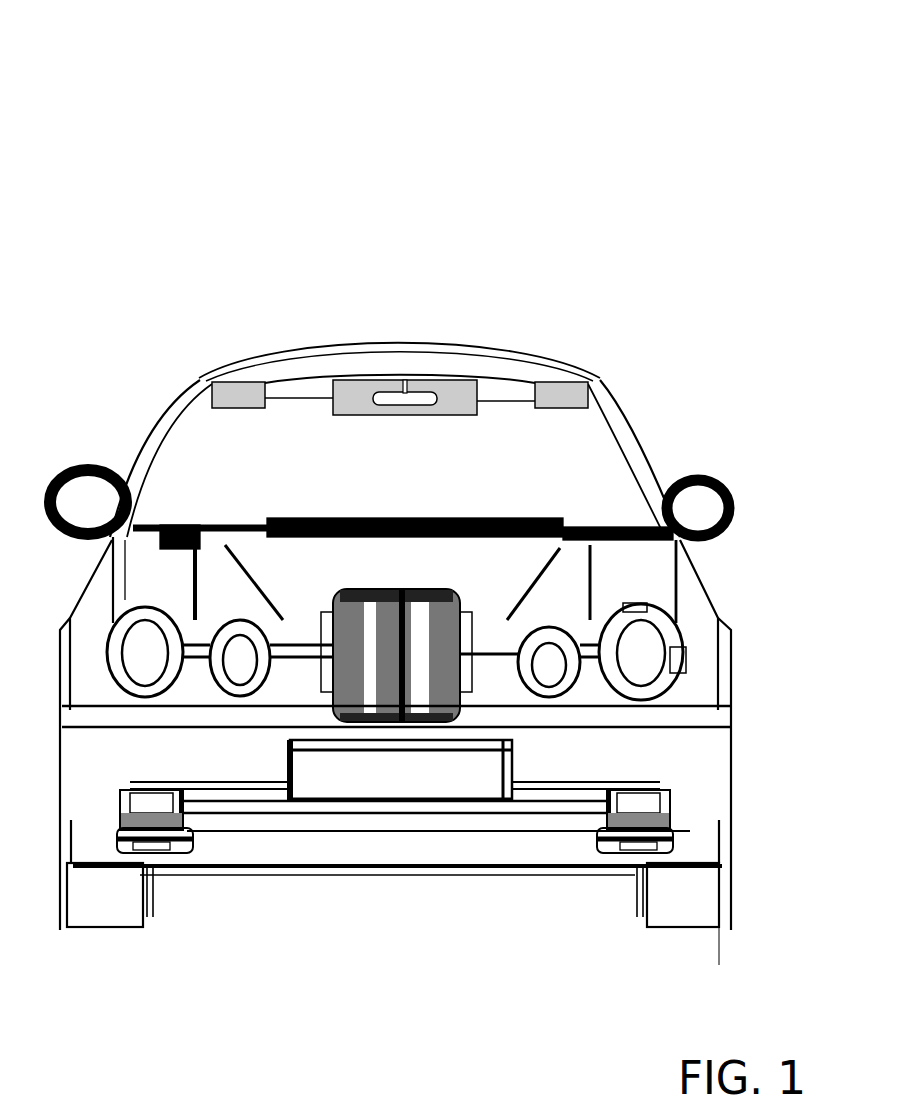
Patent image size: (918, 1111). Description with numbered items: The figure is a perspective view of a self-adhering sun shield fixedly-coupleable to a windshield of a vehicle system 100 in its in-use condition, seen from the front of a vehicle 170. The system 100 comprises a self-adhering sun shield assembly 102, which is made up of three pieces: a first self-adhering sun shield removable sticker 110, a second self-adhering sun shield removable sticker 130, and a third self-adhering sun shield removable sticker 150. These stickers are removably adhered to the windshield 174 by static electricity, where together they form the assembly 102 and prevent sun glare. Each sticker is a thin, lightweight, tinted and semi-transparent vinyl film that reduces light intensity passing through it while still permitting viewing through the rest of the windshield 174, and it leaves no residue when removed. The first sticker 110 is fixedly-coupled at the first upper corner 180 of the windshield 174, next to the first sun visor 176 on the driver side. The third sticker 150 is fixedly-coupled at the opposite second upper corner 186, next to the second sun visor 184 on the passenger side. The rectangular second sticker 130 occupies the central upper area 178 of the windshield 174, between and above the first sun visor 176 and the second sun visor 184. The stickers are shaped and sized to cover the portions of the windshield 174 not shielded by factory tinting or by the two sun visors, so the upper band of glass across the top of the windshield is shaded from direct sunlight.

The self-adhering sun shield fixedly-coupleable to a windshield of a vehicle system 100 is at (640, 78).
The self-adhering sun shield assembly 102 is at (654, 127).
The first self-adhering sun shield removable sticker 110 is at (586, 397).
The second self-adhering sun shield removable sticker 130 is at (444, 377).
The third self-adhering sun shield removable sticker 150 is at (213, 398).
The vehicle 170 is at (718, 612).
The windshield 174 is at (568, 452).
The first sun visor 176 is at (509, 384).
The central upper area 178 is at (403, 374).
The first upper corner 180 is at (543, 387).
The second sun visor 184 is at (297, 383).
The second upper corner 186 is at (213, 379).